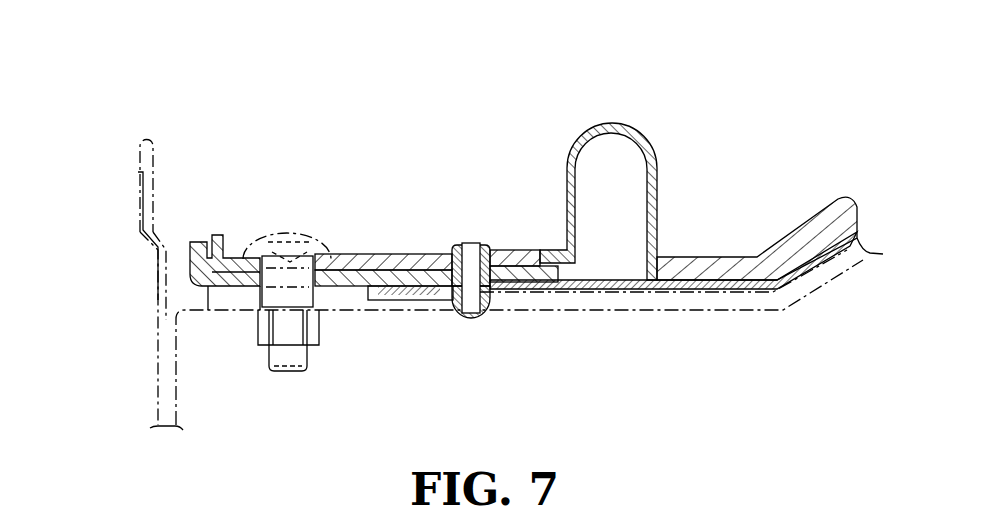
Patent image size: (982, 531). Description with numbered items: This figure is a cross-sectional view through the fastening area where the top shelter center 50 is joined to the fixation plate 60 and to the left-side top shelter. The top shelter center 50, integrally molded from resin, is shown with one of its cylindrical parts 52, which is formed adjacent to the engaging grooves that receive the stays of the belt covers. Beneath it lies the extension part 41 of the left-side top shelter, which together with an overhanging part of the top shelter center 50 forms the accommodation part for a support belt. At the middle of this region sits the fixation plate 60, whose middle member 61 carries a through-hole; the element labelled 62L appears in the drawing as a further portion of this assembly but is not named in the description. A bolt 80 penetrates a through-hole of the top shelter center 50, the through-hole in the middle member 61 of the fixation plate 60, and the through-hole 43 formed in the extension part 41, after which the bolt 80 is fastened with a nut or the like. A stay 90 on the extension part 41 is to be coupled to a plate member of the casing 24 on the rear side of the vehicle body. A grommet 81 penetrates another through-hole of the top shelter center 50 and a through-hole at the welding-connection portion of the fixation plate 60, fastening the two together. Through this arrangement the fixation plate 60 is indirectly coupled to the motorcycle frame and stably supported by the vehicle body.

The casing 24 is at (147, 229).
The extension part 41 is at (580, 313).
The through-hole 43 is at (311, 291).
The top shelter center 50 is at (783, 235).
The cylindrical part 52 is at (600, 123).
The fixation plate 60 is at (198, 238).
The middle member 61 is at (352, 286).
The lower plate 62L is at (622, 288).
The bolt 80 is at (318, 240).
The grommet 81 is at (483, 248).
The stay 90 is at (222, 314).